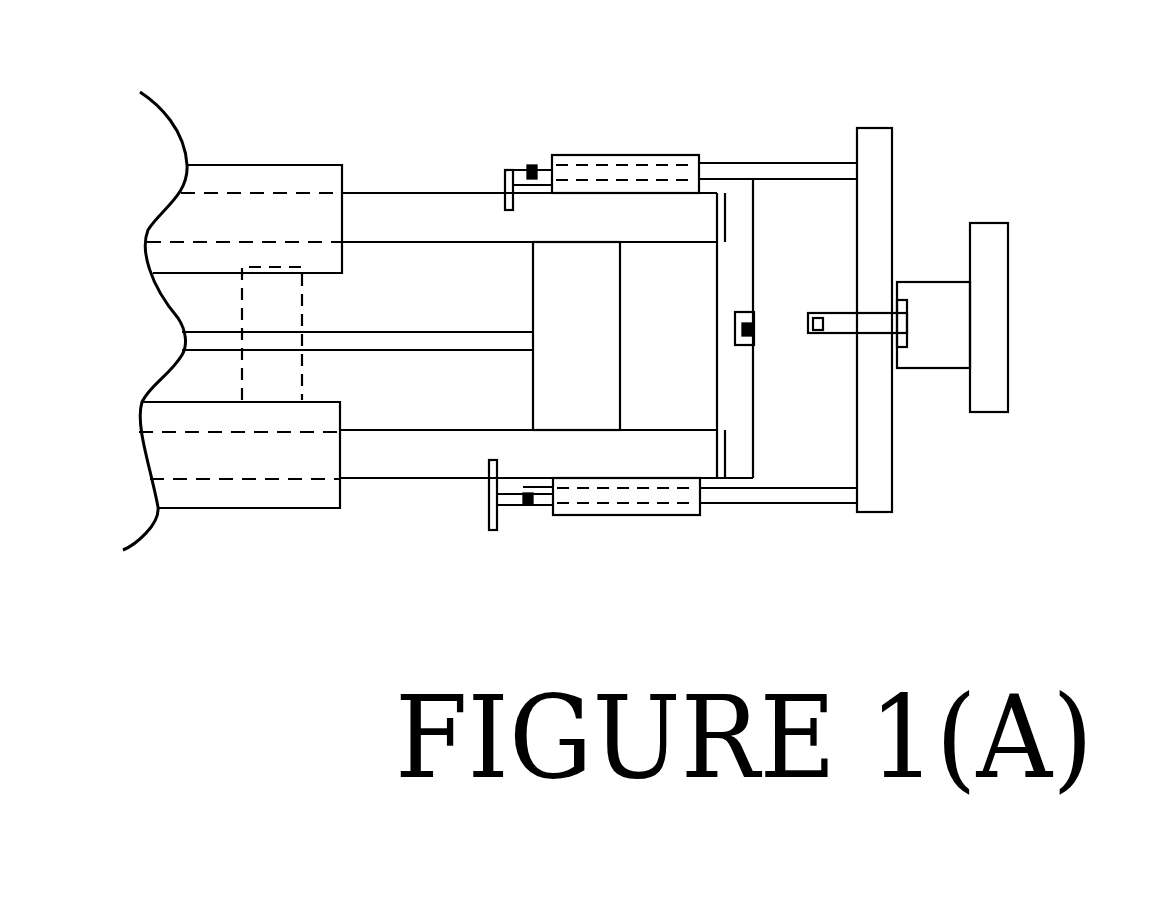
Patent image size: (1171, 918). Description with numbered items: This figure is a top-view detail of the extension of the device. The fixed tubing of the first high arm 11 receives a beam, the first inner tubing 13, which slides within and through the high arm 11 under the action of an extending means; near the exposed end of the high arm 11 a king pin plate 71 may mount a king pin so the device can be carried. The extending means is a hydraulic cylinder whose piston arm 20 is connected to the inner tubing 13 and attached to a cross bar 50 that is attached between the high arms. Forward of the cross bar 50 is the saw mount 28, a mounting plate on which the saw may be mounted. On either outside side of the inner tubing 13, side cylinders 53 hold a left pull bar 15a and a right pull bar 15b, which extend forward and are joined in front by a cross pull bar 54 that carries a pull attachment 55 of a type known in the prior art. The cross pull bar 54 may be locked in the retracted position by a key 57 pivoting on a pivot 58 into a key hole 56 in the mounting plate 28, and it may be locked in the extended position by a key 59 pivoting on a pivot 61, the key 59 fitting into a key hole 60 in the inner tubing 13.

The first high arm 11 is at (222, 162).
The first inner tubing 13 is at (417, 207).
The left pull bar 15a is at (817, 167).
The right pull bar 15b is at (737, 495).
The piston arm 20 is at (343, 340).
The saw mount 28 is at (735, 218).
The cross bar 50 is at (612, 344).
The side cylinder 53 is at (607, 155).
The cross pull bar 54 is at (878, 145).
The pull attachment 55 is at (997, 322).
The key hole 56 is at (745, 328).
The key 57 is at (848, 326).
The pivot 58 is at (900, 307).
The key 59 is at (490, 502).
The key hole 60 is at (495, 470).
The pivot 61 is at (532, 506).
The king pin plate 71 is at (283, 293).